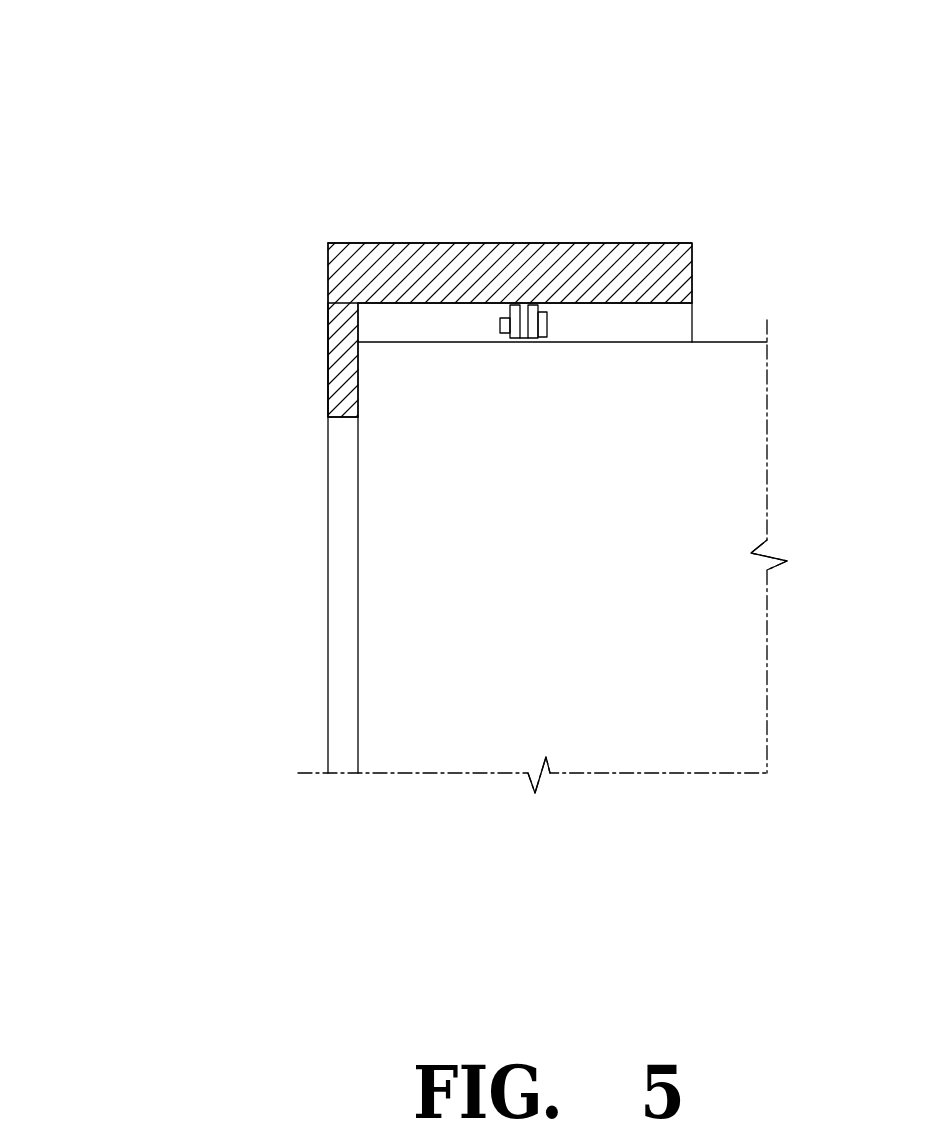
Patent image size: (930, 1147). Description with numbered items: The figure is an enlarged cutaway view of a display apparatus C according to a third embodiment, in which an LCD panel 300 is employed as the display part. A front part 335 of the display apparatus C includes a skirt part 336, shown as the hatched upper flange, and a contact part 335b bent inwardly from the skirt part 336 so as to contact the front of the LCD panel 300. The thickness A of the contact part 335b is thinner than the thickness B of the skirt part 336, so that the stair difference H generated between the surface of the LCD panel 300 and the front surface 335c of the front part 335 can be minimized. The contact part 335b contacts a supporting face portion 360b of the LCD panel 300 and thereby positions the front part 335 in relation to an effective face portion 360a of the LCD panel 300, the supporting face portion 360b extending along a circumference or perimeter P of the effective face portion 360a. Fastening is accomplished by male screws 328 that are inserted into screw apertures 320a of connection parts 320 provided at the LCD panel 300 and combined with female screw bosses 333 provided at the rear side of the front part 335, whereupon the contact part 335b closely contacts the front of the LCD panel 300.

The LCD panel 300 is at (760, 650).
The connection part 320 is at (523, 307).
The screw aperture 320a is at (523, 341).
The male screw 328 is at (548, 303).
The female screw boss 333 is at (507, 310).
The front part 335 is at (112, 257).
The contact part 335b is at (337, 410).
The front surface 335c is at (328, 323).
The skirt part 336 is at (452, 243).
The effective face portion 360a is at (356, 635).
The supporting face portion 360b is at (358, 390).
The display apparatus C is at (735, 173).
The circumference or perimeter P is at (356, 419).
The thickness of the contact part A is at (262, 548).
The thickness of the skirt part B is at (696, 243).
The stair difference H is at (425, 850).